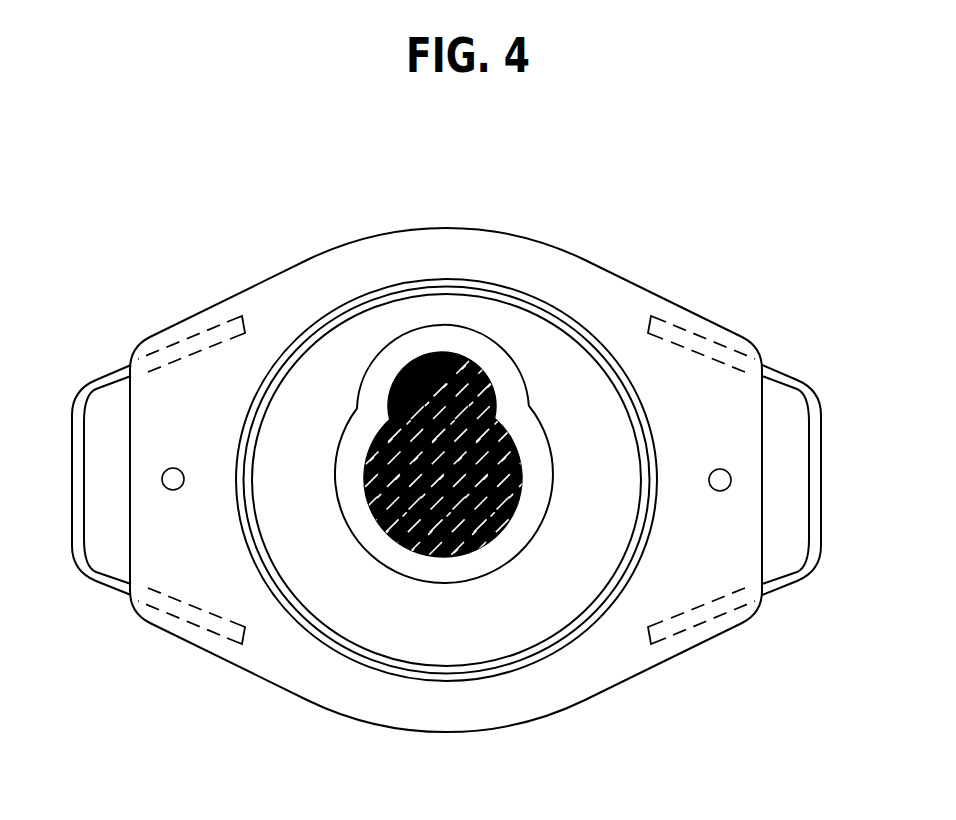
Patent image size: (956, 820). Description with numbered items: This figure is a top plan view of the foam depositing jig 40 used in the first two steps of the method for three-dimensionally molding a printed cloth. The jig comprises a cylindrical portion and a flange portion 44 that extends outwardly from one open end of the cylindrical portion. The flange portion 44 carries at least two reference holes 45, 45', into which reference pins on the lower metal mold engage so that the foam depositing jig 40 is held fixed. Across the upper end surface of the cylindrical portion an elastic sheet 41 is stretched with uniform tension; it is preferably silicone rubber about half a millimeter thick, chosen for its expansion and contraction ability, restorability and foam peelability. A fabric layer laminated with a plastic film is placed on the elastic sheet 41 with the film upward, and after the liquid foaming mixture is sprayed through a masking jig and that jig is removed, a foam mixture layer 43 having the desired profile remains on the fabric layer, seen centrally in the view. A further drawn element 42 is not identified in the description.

The foam depositing jig 40 is at (686, 141).
The elastic sheet 41 is at (573, 568).
The keyhole-shaped recess 42 is at (471, 344).
The foam mixture layer 43 is at (397, 372).
The flange portion 44 is at (487, 710).
The reference hole 45 is at (737, 459).
The reference hole 45' is at (156, 439).